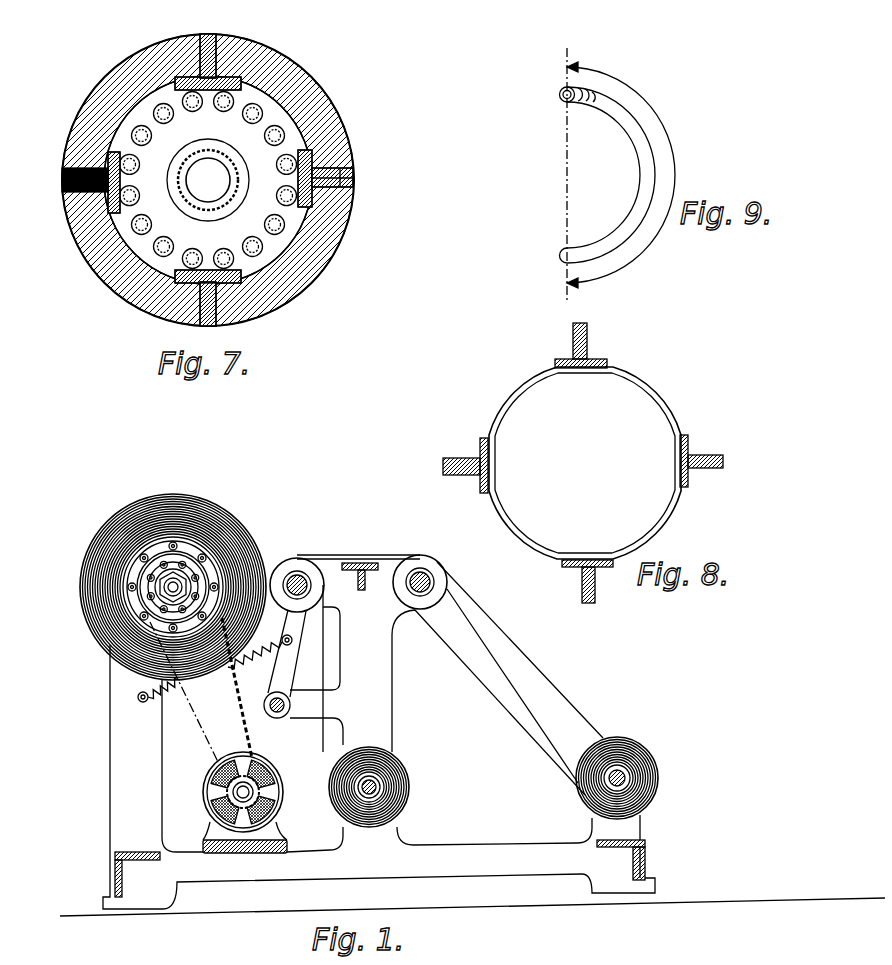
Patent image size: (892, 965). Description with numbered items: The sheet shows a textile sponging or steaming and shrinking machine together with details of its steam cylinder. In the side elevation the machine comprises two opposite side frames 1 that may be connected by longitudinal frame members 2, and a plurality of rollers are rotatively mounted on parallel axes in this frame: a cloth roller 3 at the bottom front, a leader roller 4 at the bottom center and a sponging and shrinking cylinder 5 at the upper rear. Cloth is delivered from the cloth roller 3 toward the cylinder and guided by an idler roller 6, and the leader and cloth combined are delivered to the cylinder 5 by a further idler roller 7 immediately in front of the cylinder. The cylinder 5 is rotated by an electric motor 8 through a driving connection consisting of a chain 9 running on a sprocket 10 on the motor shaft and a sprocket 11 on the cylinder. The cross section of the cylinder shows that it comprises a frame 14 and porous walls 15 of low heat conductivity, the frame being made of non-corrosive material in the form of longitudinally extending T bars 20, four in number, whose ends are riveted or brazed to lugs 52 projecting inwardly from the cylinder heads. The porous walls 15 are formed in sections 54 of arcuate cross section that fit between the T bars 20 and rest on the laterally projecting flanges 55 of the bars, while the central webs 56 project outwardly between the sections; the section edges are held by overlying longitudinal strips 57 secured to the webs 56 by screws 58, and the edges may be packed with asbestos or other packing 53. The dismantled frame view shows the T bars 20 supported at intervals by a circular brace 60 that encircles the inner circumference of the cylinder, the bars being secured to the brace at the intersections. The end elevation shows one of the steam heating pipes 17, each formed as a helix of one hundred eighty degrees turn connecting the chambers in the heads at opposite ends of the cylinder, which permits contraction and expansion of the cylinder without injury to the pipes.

In FIG. 1, the side frame 1 is at (372, 682).
In FIG. 1, the longitudinal frame member 2 is at (130, 850).
In FIG. 1, the cloth roller 3 is at (650, 802).
In FIG. 1, the leader roller 4 is at (412, 778).
In FIG. 1, the sponging and shrinking cylinder 5 is at (240, 530).
In FIG. 1, the idler roller 6 is at (435, 600).
In FIG. 1, the idler roller 7 is at (292, 560).
In FIG. 1, the electric motor 8 is at (280, 768).
In FIG. 1, the chain 9 is at (200, 724).
In FIG. 1, the sprocket 10 is at (207, 776).
In FIG. 1, the sprocket 11 is at (180, 553).
In FIG. 7, the frame 14 is at (207, 92).
In FIG. 8, the frame 14 is at (489, 463).
In FIG. 7, the porous walls 15 is at (325, 268).
In FIG. 9, the steam heating pipe 17 is at (648, 163).
In FIG. 7, the T bar 20 is at (300, 152).
In FIG. 8, the T bar 20 is at (592, 343).
In FIG. 7, the lug 52 is at (204, 262).
In FIG. 7, the packing 53 is at (312, 162).
In FIG. 7, the wall section 54 is at (300, 296).
In FIG. 7, the flange 55 is at (238, 275).
In FIG. 7, the web 56 is at (318, 174).
In FIG. 8, the web 56 is at (706, 458).
In FIG. 7, the longitudinal strip 57 is at (346, 182).
In FIG. 7, the screw 58 is at (343, 175).
In FIG. 8, the circular brace 60 is at (655, 392).